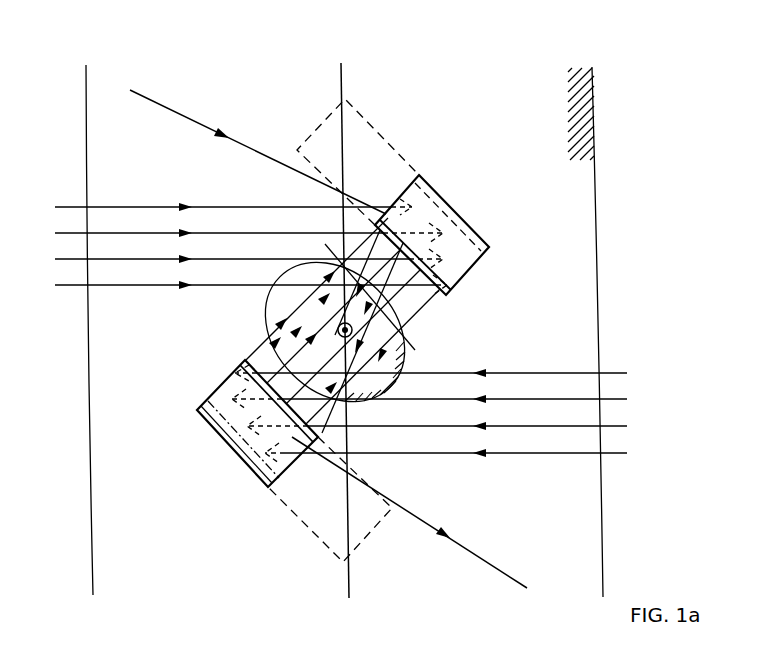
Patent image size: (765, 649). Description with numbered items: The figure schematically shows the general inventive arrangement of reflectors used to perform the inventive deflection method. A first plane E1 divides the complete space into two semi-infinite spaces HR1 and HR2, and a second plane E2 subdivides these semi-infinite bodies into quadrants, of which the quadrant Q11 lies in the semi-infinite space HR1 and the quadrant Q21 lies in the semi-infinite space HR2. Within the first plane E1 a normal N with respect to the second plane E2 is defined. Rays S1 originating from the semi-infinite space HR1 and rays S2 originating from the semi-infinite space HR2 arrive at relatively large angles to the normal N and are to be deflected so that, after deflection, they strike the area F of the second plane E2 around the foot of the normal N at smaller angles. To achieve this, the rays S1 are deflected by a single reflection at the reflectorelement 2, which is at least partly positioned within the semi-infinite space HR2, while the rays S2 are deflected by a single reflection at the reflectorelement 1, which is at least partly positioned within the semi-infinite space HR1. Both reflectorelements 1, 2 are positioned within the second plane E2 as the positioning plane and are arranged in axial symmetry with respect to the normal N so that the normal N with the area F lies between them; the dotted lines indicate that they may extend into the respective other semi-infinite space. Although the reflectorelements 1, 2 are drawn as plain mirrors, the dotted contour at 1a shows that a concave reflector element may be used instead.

The reflectorelement 1 is at (426, 201).
The concave reflector element 1a is at (231, 460).
The reflectorelement 2 is at (220, 404).
The normal N is at (352, 325).
The area F is at (390, 399).
The first plane E1 is at (348, 573).
The second plane E2 is at (565, 113).
The rays S1 is at (442, 398).
The rays S2 is at (245, 232).
The semi-infinite space HR1 is at (576, 332).
The semi-infinite space HR2 is at (117, 330).
The quadrant Q11 is at (556, 479).
The quadrant Q21 is at (126, 434).